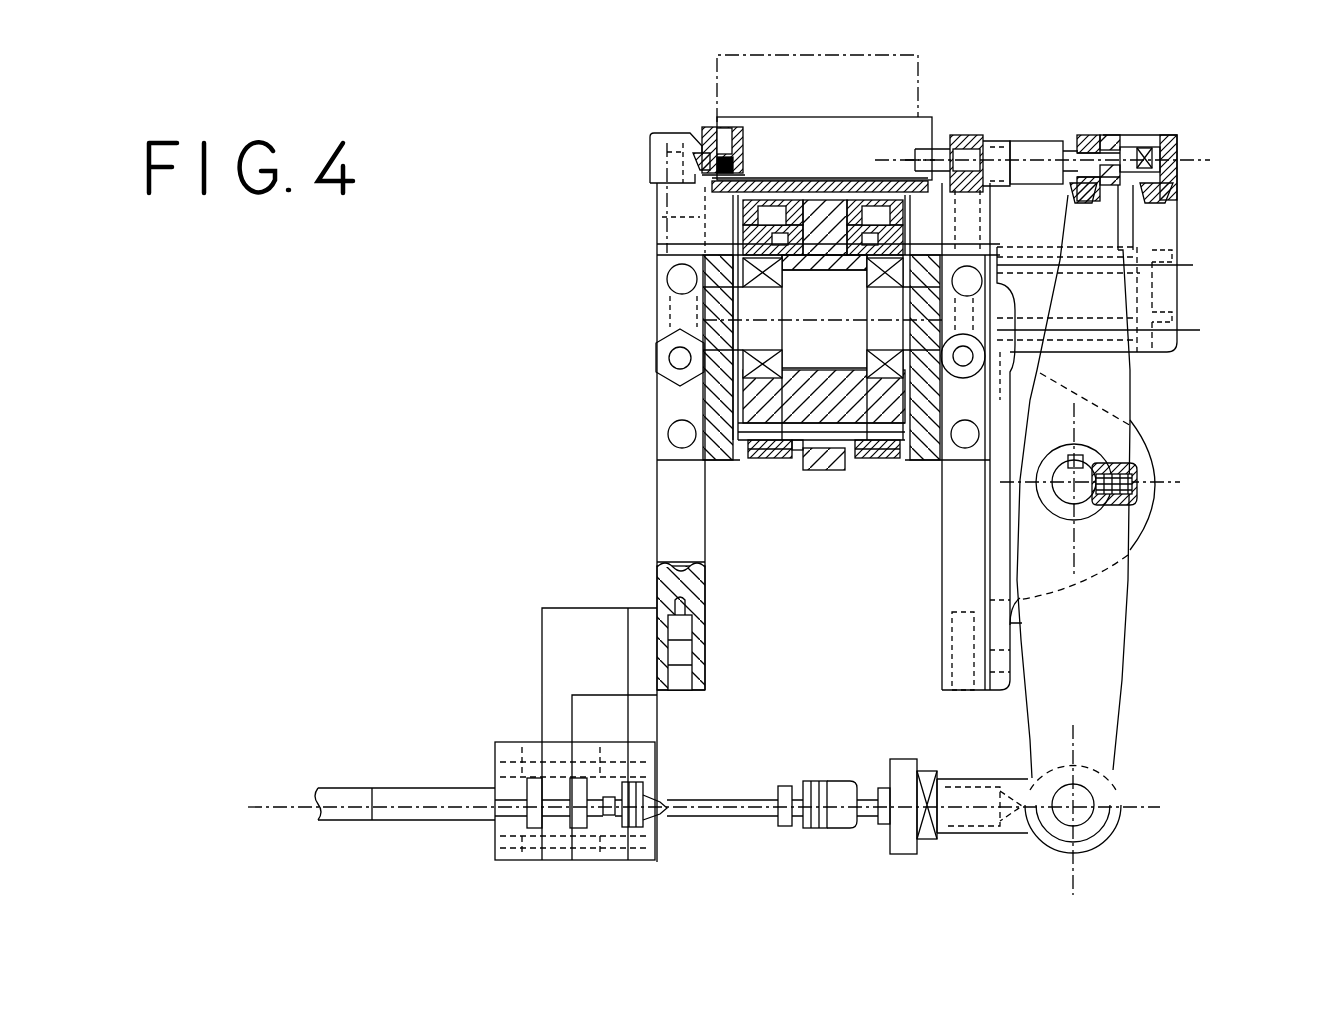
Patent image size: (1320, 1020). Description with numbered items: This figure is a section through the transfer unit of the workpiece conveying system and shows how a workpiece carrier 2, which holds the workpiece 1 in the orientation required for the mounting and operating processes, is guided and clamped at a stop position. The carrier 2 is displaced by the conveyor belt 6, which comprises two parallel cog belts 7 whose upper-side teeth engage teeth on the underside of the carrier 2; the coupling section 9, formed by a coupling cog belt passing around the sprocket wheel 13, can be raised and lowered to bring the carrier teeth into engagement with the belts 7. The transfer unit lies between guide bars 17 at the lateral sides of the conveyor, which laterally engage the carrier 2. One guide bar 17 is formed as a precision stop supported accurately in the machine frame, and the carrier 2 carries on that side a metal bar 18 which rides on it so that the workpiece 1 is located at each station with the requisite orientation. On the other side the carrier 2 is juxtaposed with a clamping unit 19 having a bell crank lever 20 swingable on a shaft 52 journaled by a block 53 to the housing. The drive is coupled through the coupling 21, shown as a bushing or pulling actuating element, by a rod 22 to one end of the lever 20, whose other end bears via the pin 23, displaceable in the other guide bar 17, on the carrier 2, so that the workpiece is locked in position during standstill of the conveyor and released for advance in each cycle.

The workpiece 1 is at (893, 46).
The workpiece carrier 2 is at (875, 130).
The conveyor belt 6 is at (790, 472).
The cog belt 7 is at (782, 466).
The coupling section 9 is at (822, 482).
The sprocket wheel 13 is at (712, 400).
The guide bar 17 is at (652, 135).
The metal bar 18 is at (702, 135).
The clamping unit 19 is at (1128, 130).
The bell crank lever 20 is at (1108, 384).
The coupling 21 is at (352, 789).
The rod 22 is at (1085, 795).
The pin 23 is at (1000, 192).
The shaft 52 is at (1078, 498).
The block 53 is at (1140, 484).